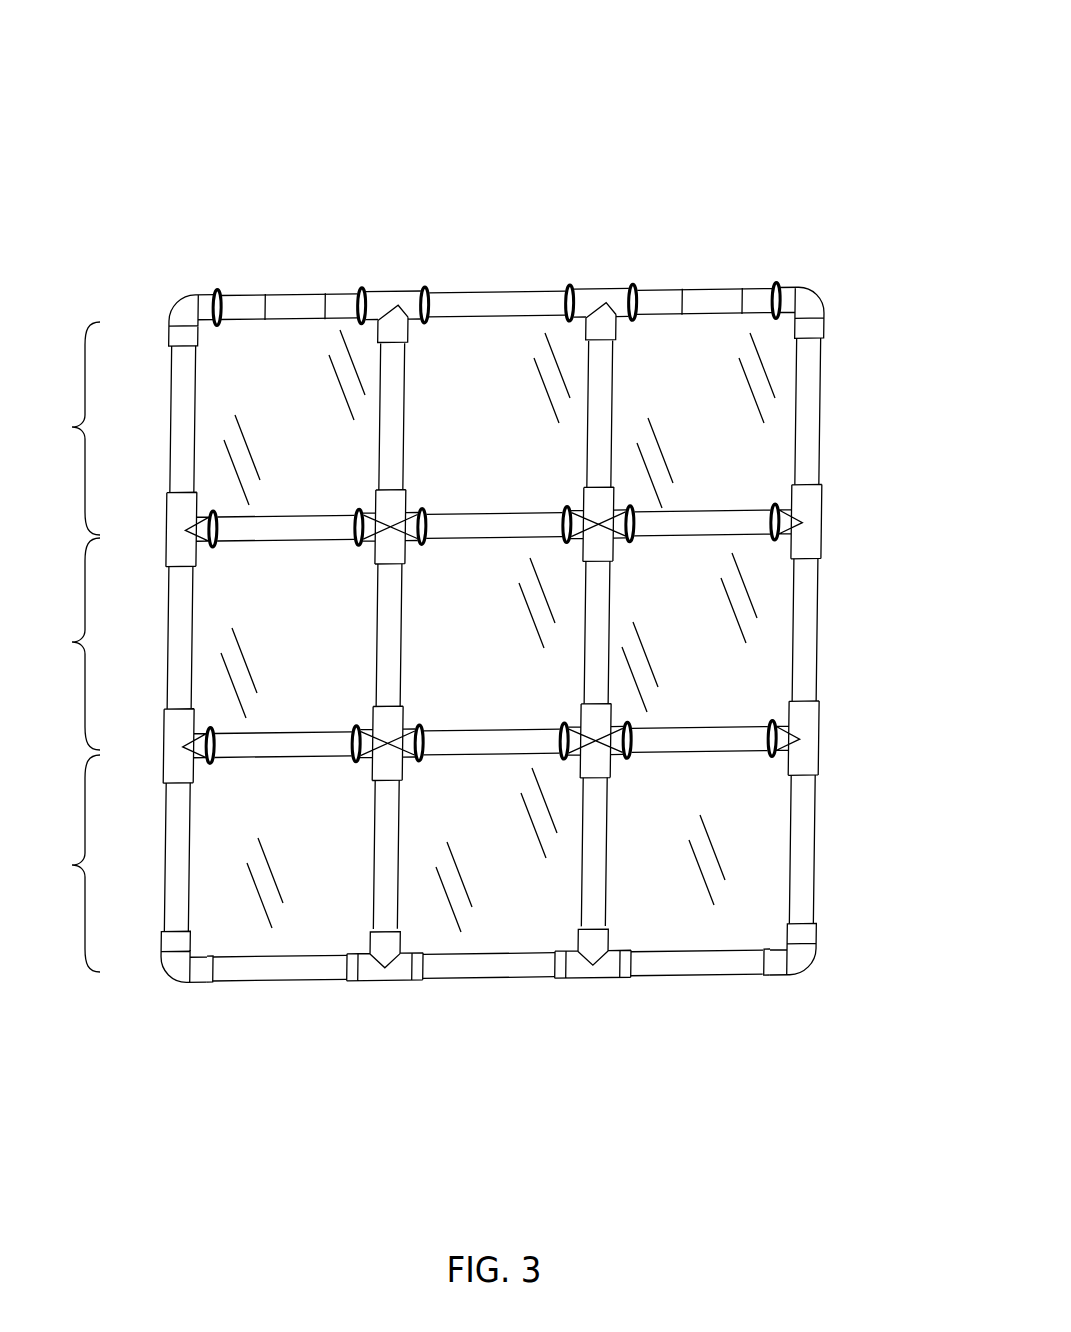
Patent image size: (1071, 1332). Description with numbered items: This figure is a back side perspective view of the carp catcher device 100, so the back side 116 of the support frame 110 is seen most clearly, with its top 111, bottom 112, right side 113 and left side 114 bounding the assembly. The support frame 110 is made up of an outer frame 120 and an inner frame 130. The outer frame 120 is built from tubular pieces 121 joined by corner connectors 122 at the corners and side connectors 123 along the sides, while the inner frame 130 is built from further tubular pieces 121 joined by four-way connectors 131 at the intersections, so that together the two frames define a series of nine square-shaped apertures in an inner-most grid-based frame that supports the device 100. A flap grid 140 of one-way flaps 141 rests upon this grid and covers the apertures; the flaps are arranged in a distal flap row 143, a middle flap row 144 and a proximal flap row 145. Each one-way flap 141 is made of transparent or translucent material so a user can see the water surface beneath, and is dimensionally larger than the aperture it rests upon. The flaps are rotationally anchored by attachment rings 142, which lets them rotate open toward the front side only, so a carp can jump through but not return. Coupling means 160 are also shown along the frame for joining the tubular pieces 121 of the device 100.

The carp catcher device 100 is at (131, 155).
The support frame 110 is at (834, 839).
The top 111 is at (658, 272).
The bottom 112 is at (671, 980).
The right side 113 is at (163, 675).
The left side 114 is at (835, 687).
The back side 116 is at (312, 712).
The outer frame 120 is at (836, 608).
The tubular piece 121 is at (247, 303).
The corner connector 122 is at (187, 312).
The side connector 123 is at (381, 295).
The inner frame 130 is at (616, 617).
The four-way connector 131 is at (395, 553).
The flap grid 140 is at (498, 391).
The one-way flap 141 is at (288, 353).
The attachment ring 142 is at (362, 294).
The distal flap row 143 is at (64, 428).
The middle flap row 144 is at (64, 644).
The proximal flap row 145 is at (64, 863).
The coupling means 160 is at (273, 303).